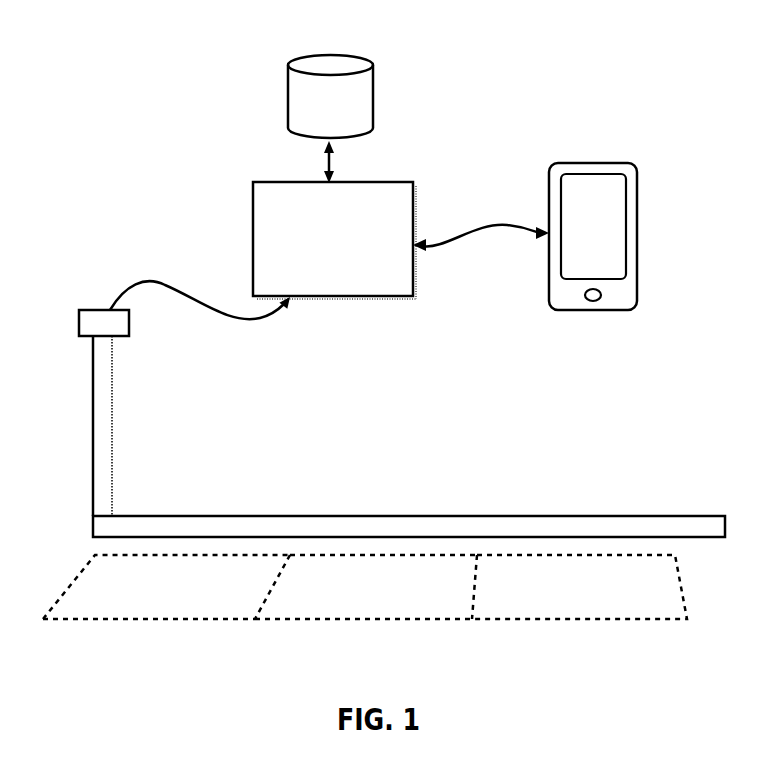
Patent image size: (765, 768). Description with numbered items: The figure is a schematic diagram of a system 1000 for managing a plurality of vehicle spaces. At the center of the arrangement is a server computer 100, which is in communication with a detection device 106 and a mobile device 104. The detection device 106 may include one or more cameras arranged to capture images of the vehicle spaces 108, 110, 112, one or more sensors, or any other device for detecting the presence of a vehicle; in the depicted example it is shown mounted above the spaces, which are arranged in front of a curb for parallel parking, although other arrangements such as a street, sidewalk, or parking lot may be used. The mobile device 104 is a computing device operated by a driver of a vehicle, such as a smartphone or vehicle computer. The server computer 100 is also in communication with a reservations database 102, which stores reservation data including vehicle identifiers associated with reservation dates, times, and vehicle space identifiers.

The system 1000 is at (505, 95).
The server computer 100 is at (352, 279).
The reservations database 102 is at (349, 114).
The mobile device 104 is at (610, 236).
The detection device 106 is at (80, 337).
The vehicle space 108 is at (186, 599).
The vehicle space 110 is at (394, 599).
The vehicle space 112 is at (601, 599).